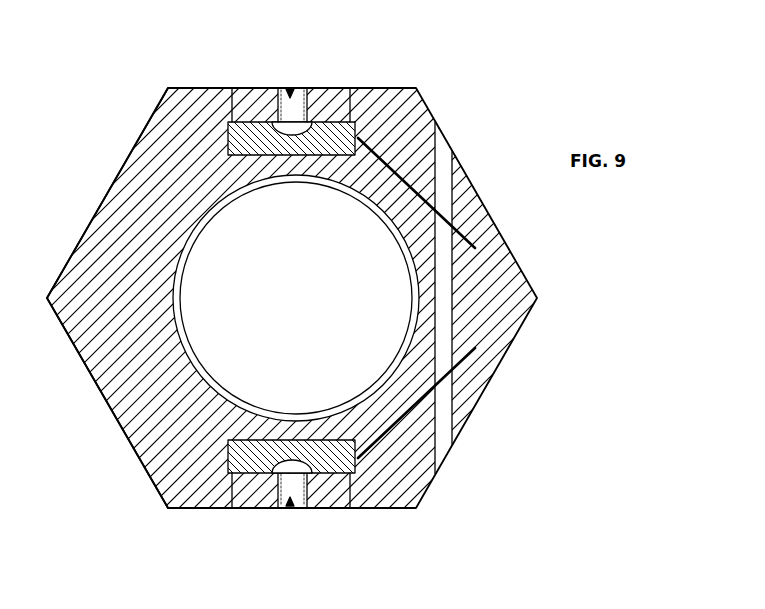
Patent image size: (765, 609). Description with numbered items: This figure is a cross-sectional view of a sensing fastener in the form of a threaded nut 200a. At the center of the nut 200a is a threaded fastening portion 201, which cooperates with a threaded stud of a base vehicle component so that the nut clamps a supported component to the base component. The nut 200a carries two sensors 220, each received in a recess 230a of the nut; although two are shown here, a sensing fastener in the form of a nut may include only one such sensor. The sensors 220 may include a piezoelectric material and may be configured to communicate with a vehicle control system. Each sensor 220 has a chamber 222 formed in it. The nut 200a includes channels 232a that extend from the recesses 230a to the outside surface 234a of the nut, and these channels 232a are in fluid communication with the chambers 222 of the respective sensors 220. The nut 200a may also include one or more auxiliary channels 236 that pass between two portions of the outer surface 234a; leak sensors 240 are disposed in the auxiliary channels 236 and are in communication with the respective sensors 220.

The threaded nut 200a is at (180, 108).
The threaded fastening portion 201 is at (205, 225).
The sensor 220 is at (233, 121).
The chamber 222 is at (290, 93).
The recess 230a is at (350, 120).
The channel 232a is at (284, 98).
The outside surface 234a is at (102, 200).
The auxiliary channel 236 is at (443, 166).
The leak sensor 240 is at (472, 214).